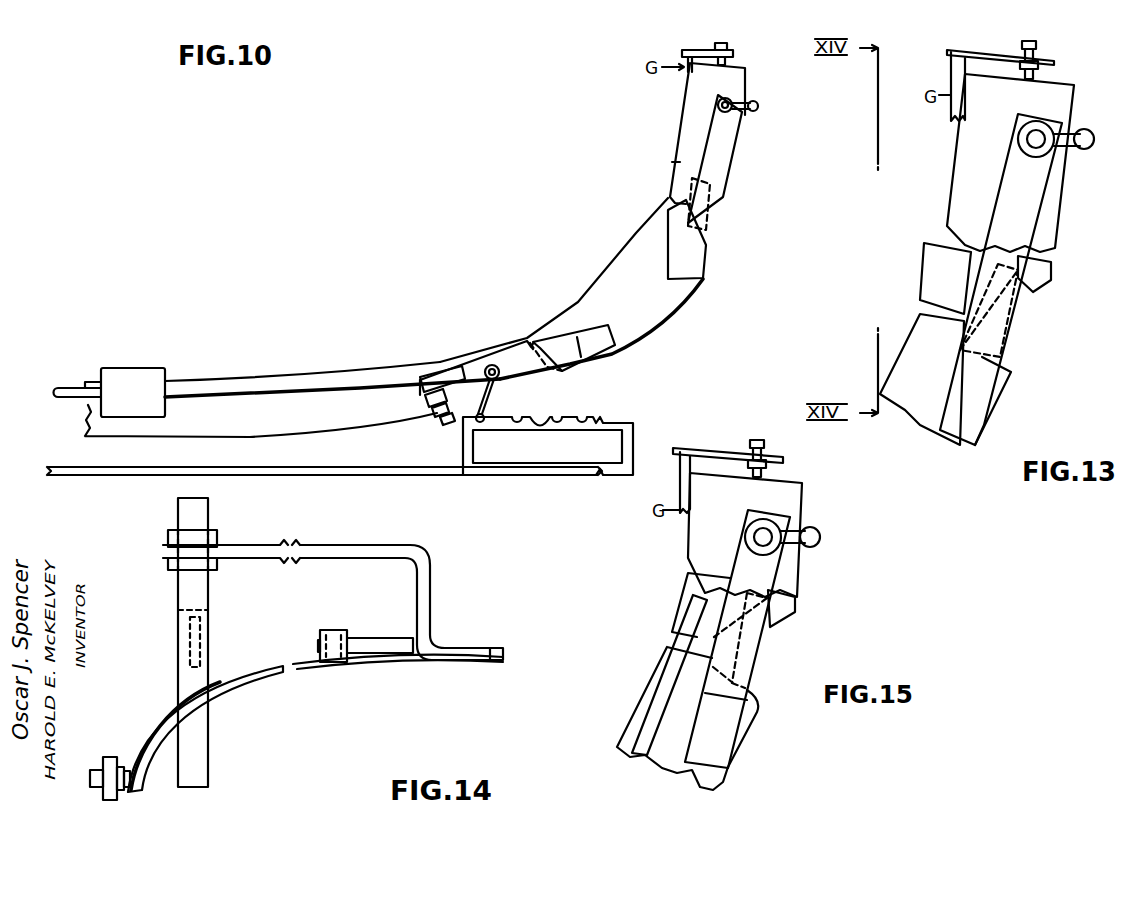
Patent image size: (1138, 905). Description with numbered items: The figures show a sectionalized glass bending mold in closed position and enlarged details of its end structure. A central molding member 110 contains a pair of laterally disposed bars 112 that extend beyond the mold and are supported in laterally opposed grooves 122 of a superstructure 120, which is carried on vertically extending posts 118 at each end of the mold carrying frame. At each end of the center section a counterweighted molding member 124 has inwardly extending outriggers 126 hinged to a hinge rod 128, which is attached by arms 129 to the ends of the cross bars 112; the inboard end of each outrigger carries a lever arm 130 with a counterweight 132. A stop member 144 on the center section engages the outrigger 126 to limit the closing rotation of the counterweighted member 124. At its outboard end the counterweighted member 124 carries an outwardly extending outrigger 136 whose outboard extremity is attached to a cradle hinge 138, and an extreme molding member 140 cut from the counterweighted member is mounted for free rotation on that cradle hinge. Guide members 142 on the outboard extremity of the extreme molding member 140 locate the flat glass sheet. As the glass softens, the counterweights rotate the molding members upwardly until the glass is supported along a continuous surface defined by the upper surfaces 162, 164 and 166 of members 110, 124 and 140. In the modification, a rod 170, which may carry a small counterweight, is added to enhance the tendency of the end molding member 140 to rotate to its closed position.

In FIG. 10, the central molding member 110 is at (324, 439).
In FIG. 10, the bars 112 is at (481, 423).
In FIG. 10, the posts 118 is at (463, 450).
In FIG. 10, the superstructure 120 is at (587, 413).
In FIG. 10, the grooves 122 is at (536, 451).
In FIG. 10, the counterweighted molding member 124 is at (601, 329).
In FIG. 13, the counterweighted molding member 124 is at (945, 344).
In FIG. 15, the counterweighted molding member 124 is at (663, 760).
In FIG. 14, the counterweighted molding member 124 is at (363, 665).
In FIG. 10, the outriggers 126 is at (542, 368).
In FIG. 10, the hinge rod 128 is at (492, 365).
In FIG. 10, the arms 129 is at (478, 375).
In FIG. 10, the lever arm 130 is at (272, 381).
In FIG. 10, the counterweight 132 is at (124, 368).
In FIG. 10, the outrigger 136 is at (688, 257).
In FIG. 13, the outrigger 136 is at (1015, 266).
In FIG. 15, the outrigger 136 is at (783, 593).
In FIG. 14, the outrigger 136 is at (292, 545).
In FIG. 10, the cradle hinge 138 is at (733, 99).
In FIG. 13, the cradle hinge 138 is at (1038, 137).
In FIG. 15, the cradle hinge 138 is at (775, 527).
In FIG. 14, the cradle hinge 138 is at (195, 552).
In FIG. 10, the extreme molding member 140 is at (688, 132).
In FIG. 13, the extreme molding member 140 is at (1010, 163).
In FIG. 15, the extreme molding member 140 is at (745, 535).
In FIG. 14, the extreme molding member 140 is at (152, 730).
In FIG. 10, the guide members 142 is at (693, 47).
In FIG. 13, the guide members 142 is at (1051, 59).
In FIG. 15, the guide members 142 is at (777, 462).
In FIG. 10, the stop member 144 is at (427, 418).
In FIG. 10, the upper surface 162 is at (88, 380).
In FIG. 10, the upper surface 164 is at (636, 262).
In FIG. 10, the upper surface 166 is at (661, 162).
In FIG. 15, the rod 170 is at (655, 698).